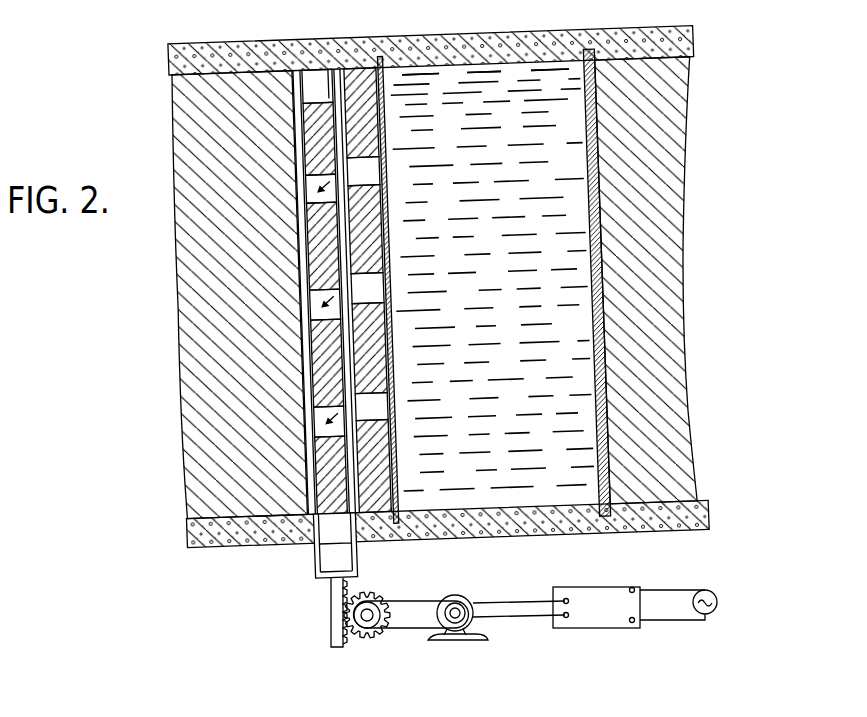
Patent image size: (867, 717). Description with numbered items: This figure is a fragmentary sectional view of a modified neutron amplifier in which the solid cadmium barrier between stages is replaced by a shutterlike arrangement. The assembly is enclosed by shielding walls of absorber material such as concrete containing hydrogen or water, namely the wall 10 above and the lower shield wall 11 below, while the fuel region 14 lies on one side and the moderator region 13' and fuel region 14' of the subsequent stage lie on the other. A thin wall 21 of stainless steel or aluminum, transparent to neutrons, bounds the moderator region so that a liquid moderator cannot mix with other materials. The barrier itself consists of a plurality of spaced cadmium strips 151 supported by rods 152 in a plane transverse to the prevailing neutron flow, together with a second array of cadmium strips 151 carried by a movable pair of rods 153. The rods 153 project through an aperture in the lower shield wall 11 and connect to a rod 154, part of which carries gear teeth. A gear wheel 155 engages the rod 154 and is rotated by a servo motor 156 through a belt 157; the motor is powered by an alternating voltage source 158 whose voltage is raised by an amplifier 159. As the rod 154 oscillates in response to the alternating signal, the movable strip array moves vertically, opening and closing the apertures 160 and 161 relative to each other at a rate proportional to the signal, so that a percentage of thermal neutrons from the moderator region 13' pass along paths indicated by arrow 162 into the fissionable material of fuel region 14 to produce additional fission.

The wall 10 is at (170, 62).
The lower shield wall 11 is at (190, 531).
The fuel region 14 is at (238, 269).
The fuel region of subsequent stage 14' is at (650, 256).
The moderator region of subsequent stage 13' is at (491, 250).
The wall 21 is at (593, 228).
The cadmium strip 151 is at (378, 494).
The rod 152 is at (384, 457).
The movable pair of rods 153 is at (353, 561).
The rod 154 is at (335, 607).
The gear wheel 155 is at (378, 596).
The servo motor 156 is at (466, 597).
The belt 157 is at (436, 598).
The alternating voltage source 158 is at (713, 597).
The amplifier 159 is at (615, 587).
The aperture 160 is at (378, 416).
The aperture 161 is at (322, 416).
The arrow 162 is at (417, 401).